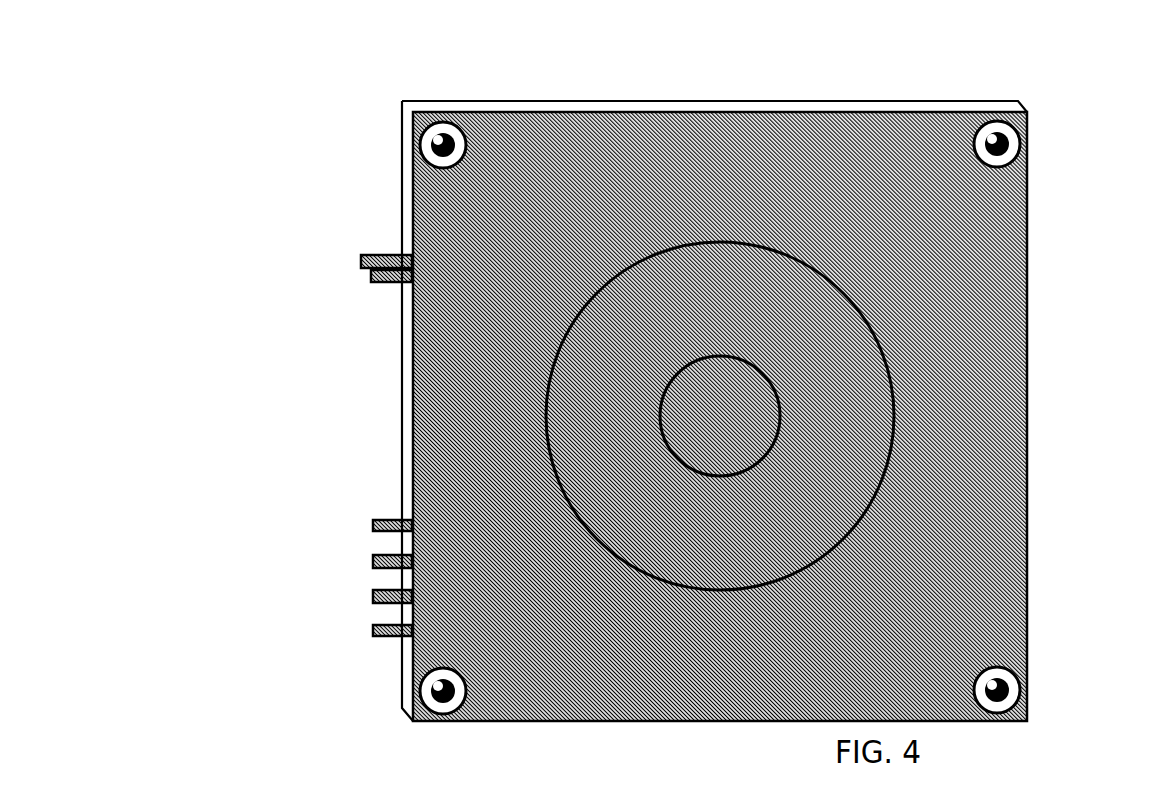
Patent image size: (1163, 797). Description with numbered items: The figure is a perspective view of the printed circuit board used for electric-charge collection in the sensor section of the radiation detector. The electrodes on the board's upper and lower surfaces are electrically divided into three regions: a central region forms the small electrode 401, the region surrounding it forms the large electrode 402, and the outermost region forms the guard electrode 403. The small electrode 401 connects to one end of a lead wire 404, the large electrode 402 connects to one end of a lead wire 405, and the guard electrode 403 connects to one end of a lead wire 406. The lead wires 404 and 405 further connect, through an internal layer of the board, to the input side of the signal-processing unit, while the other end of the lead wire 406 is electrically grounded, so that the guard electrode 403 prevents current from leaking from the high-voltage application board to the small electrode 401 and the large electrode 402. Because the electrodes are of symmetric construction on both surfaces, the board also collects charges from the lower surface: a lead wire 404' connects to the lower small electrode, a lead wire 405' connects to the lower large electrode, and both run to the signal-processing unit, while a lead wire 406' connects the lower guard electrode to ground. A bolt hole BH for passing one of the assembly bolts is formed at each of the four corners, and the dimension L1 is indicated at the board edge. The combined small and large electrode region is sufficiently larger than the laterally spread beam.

The small electrode 401 is at (897, 334).
The large electrode 402 is at (846, 416).
The guard electrode 403 is at (778, 411).
The lead wire 404 is at (318, 514).
The lead wire 405 is at (318, 550).
The lead wire 406 is at (317, 266).
The lead wire 404' is at (329, 607).
The lead wire 405' is at (377, 614).
The lead wire 406' is at (322, 234).
The bolt hole BH is at (427, 117).
The plate thickness dimension L1 is at (364, 713).